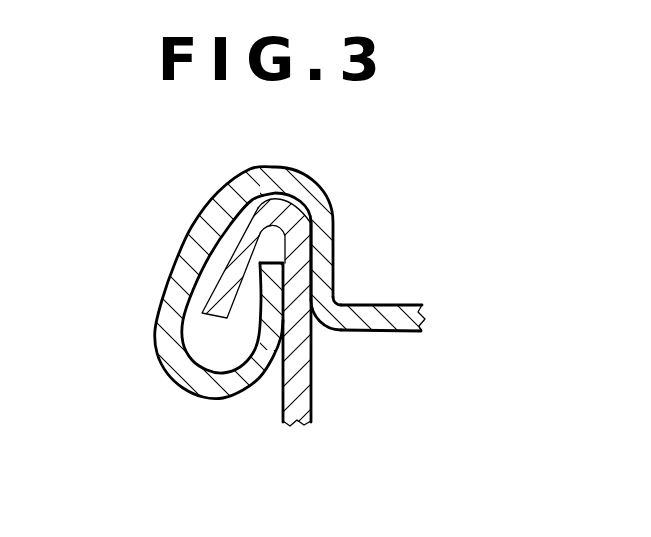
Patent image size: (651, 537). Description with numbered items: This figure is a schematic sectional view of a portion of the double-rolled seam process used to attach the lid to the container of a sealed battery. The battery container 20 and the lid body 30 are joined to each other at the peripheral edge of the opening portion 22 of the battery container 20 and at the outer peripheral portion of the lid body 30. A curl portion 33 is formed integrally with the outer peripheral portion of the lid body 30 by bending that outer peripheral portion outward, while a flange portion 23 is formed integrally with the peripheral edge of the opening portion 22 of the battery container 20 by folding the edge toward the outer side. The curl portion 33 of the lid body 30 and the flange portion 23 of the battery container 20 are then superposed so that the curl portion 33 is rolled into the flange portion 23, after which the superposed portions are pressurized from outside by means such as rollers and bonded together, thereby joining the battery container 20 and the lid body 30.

The battery container 20 is at (296, 407).
The opening portion 22 is at (359, 348).
The flange portion 23 is at (209, 276).
The lid body 30 is at (389, 318).
The curl portion 33 is at (165, 369).